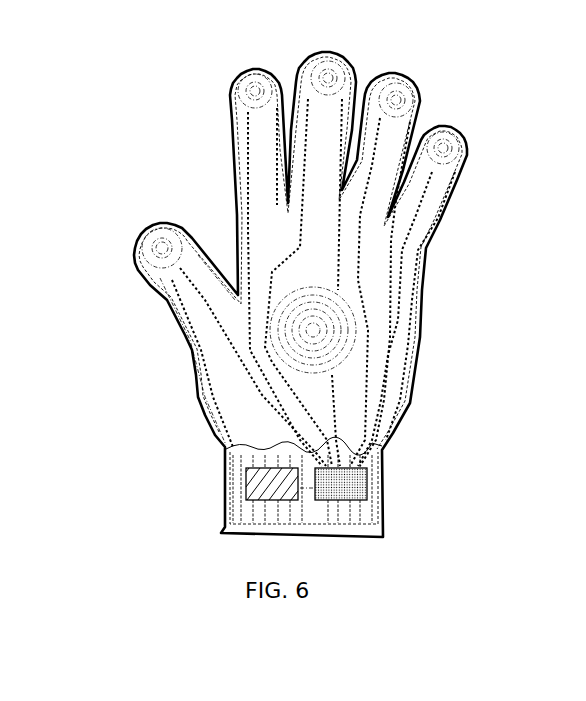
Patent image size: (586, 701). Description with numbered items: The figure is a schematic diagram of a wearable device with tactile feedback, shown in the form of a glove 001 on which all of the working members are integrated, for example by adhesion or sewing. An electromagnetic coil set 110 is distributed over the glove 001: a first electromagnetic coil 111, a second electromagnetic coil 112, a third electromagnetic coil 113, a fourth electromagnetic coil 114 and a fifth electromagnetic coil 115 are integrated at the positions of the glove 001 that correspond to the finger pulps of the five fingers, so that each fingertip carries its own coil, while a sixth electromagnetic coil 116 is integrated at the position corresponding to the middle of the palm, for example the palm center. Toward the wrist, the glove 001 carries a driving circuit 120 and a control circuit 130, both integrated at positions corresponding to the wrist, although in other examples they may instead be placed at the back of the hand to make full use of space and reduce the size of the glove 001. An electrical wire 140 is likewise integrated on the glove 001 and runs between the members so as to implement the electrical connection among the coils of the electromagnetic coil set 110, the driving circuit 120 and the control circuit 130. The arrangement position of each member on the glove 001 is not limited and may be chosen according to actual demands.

The glove 001 is at (198, 397).
The electromagnetic coil set 110 is at (185, 250).
The first electromagnetic coil 111 is at (162, 226).
The second electromagnetic coil 112 is at (277, 67).
The third electromagnetic coil 113 is at (344, 59).
The fourth electromagnetic coil 114 is at (407, 83).
The fifth electromagnetic coil 115 is at (466, 143).
The sixth electromagnetic coil 116 is at (307, 287).
The driving circuit 120 is at (367, 490).
The control circuit 130 is at (246, 487).
The electrical wire 140 is at (388, 355).